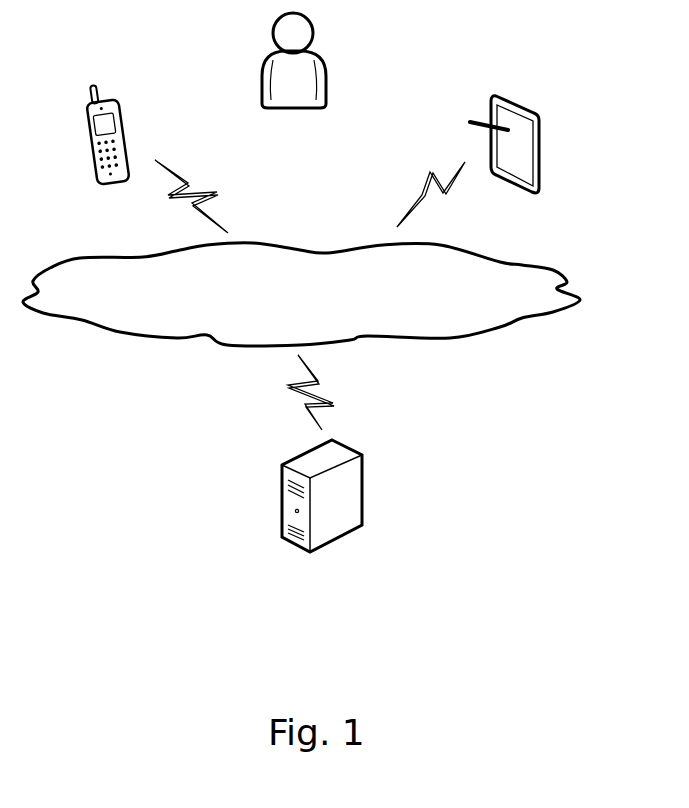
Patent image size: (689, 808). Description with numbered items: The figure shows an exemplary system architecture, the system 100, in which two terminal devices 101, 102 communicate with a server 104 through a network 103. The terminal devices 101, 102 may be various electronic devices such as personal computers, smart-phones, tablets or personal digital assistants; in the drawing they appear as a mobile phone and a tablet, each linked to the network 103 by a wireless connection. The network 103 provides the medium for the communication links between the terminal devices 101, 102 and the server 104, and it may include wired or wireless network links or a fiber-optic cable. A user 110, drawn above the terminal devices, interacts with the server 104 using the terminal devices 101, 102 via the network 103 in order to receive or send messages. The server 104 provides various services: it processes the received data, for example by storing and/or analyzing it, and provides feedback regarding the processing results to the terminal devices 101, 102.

The system 100 is at (590, 43).
The terminal device 101 is at (156, 157).
The terminal device 102 is at (468, 161).
The network 103 is at (301, 294).
The server 104 is at (322, 469).
The user 110 is at (294, 74).